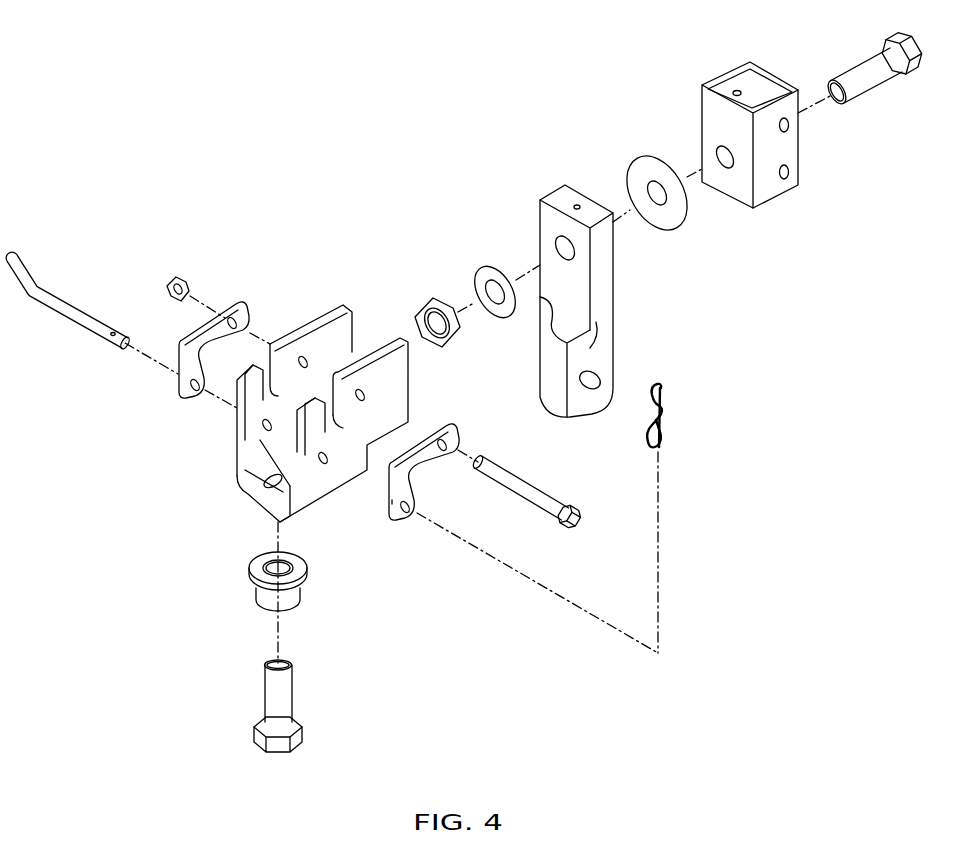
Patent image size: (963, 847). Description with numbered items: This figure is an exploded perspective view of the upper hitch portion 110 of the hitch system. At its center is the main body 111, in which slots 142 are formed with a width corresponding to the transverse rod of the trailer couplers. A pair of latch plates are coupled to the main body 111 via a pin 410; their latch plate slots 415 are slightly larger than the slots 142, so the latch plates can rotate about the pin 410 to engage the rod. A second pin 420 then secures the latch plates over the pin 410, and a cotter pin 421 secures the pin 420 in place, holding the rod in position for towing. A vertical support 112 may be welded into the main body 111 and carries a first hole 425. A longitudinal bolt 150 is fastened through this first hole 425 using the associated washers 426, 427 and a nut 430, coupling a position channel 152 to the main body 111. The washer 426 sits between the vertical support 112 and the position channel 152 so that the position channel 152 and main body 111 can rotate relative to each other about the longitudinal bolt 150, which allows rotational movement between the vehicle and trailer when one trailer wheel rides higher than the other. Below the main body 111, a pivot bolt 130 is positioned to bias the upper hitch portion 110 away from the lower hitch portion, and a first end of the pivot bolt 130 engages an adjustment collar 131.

The upper hitch portion 110 is at (376, 98).
The main body 111 is at (409, 384).
The vertical support 112 is at (615, 258).
The pivot bolt 130 is at (294, 696).
The adjustment collar 131 is at (306, 588).
The slots 142 is at (305, 363).
The longitudinal bolt 150 is at (892, 36).
The position channel 152 is at (722, 72).
The pin 410 is at (526, 480).
The latch plate slots 415 is at (392, 502).
The pin 420 is at (72, 333).
The cotter pin 421 is at (667, 399).
The first hole 425 is at (553, 240).
The washer 426 is at (640, 160).
The washer 427 is at (483, 272).
The nut 430 is at (424, 305).